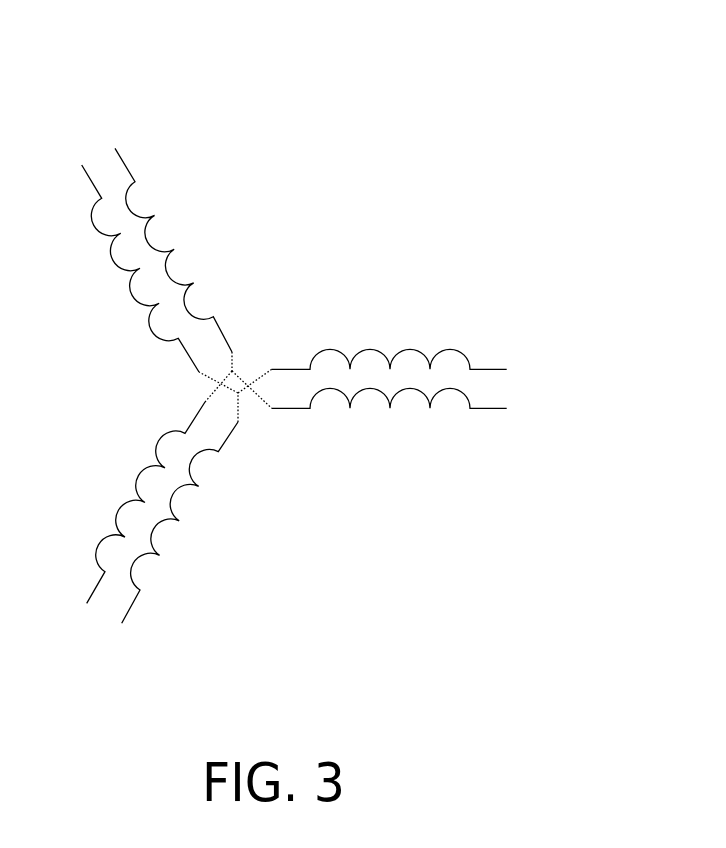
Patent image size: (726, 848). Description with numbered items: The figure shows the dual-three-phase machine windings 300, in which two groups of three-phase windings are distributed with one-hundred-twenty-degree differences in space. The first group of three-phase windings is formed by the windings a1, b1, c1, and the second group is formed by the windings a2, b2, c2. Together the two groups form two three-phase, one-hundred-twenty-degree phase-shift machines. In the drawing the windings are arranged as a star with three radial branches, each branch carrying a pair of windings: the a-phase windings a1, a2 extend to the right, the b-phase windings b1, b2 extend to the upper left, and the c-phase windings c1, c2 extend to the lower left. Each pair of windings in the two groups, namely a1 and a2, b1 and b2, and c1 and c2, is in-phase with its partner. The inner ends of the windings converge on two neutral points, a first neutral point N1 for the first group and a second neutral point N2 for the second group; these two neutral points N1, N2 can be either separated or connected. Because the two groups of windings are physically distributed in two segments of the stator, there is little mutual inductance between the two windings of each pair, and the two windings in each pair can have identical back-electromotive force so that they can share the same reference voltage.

The dual-three-phase machine windings 300 is at (712, 62).
The first-group a-phase winding a1 is at (409, 404).
The second-group a-phase winding a2 is at (409, 365).
The first-group b-phase winding b1 is at (169, 235).
The second-group b-phase winding b2 is at (128, 251).
The first-group c-phase winding c1 is at (134, 518).
The second-group c-phase winding c2 is at (173, 542).
The first neutral point N1 is at (236, 370).
The second neutral point N2 is at (242, 395).